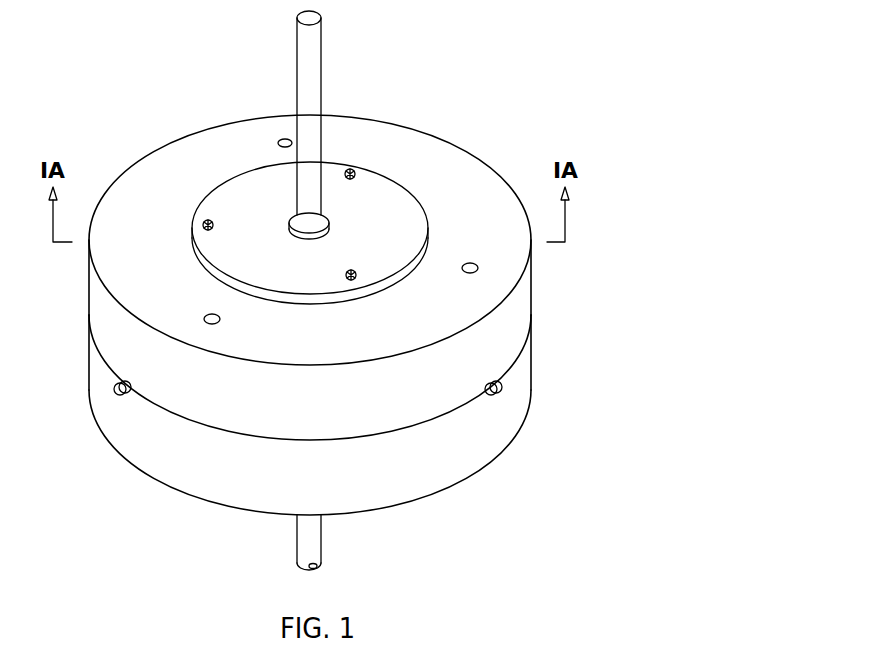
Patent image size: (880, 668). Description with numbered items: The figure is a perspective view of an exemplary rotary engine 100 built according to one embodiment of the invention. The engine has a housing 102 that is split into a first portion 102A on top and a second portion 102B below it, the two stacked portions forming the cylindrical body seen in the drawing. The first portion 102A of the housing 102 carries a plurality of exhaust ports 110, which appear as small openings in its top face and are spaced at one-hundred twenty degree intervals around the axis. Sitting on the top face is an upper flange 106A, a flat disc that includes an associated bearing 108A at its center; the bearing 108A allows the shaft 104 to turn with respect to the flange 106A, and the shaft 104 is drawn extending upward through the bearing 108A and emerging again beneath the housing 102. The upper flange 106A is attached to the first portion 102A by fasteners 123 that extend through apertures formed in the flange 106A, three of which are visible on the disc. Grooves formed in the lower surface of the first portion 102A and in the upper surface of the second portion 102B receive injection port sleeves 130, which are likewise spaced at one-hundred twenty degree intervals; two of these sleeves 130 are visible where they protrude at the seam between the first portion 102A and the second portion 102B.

The rotary engine 100 is at (502, 62).
The housing 102 is at (540, 247).
The first portion 102A is at (228, 133).
The second portion 102B is at (152, 457).
The shaft 104 is at (322, 44).
The upper flange 106A is at (405, 220).
The bearing 108A is at (329, 221).
The exhaust ports 110 is at (285, 138).
The fasteners 123 is at (350, 169).
The injection port sleeves 130 is at (108, 392).